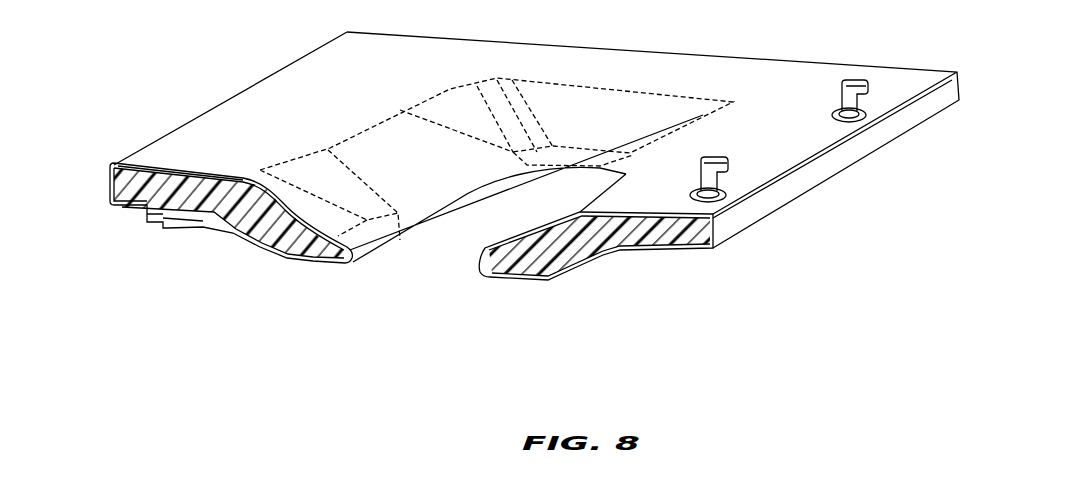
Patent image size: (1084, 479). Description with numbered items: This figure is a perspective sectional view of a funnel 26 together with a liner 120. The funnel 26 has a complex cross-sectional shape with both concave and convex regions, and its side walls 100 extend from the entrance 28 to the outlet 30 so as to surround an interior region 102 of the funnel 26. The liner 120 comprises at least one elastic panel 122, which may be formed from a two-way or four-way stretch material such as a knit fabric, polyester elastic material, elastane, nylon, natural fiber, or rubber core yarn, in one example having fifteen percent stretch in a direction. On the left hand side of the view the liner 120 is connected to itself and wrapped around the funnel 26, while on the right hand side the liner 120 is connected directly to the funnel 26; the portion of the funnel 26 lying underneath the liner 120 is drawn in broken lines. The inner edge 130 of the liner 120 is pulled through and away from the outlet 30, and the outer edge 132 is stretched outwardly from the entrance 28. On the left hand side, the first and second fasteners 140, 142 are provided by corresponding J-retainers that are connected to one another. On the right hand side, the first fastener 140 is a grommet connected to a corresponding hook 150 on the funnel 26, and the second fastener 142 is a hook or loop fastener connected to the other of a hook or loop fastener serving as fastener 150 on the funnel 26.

The funnel 26 is at (928, 108).
The entrance 28 is at (245, 183).
The outlet 30 is at (337, 270).
The side walls 100 is at (314, 240).
The interior region 102 is at (443, 257).
The liner 120 is at (197, 170).
The elastic panel 122 is at (512, 227).
The inner edge 130 is at (170, 230).
The outer edge 132 is at (111, 166).
The first fastener 140 is at (142, 214).
The second fastener 142 is at (155, 223).
The hook 150 is at (727, 165).